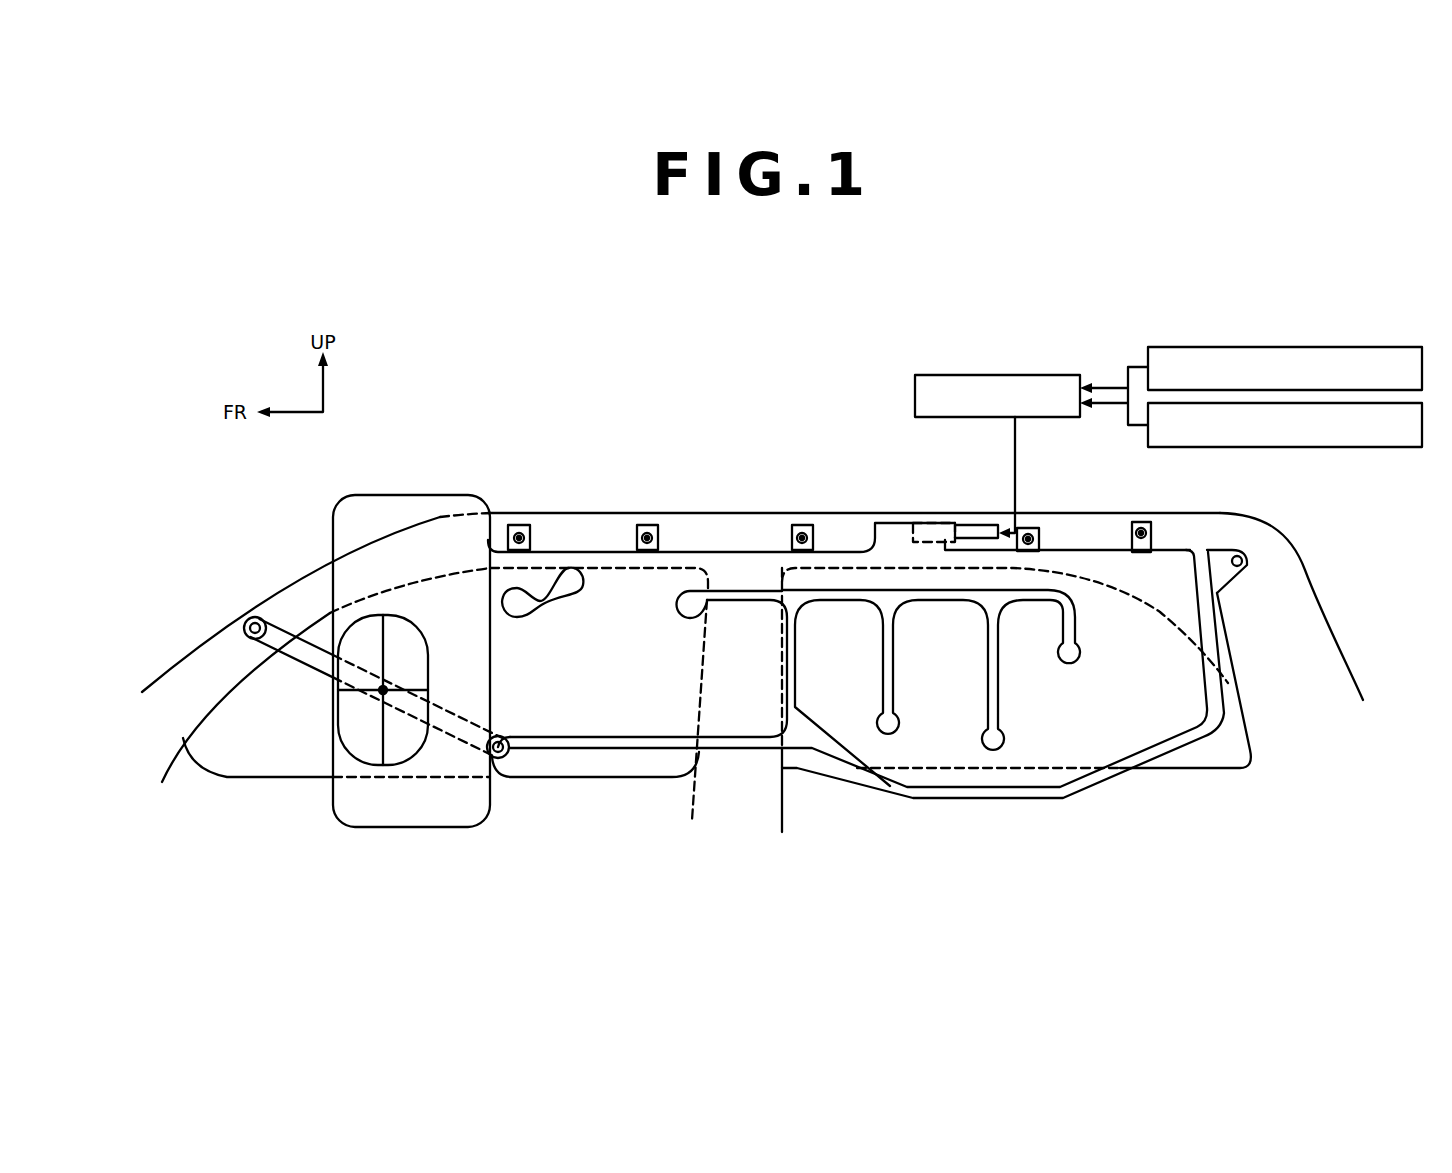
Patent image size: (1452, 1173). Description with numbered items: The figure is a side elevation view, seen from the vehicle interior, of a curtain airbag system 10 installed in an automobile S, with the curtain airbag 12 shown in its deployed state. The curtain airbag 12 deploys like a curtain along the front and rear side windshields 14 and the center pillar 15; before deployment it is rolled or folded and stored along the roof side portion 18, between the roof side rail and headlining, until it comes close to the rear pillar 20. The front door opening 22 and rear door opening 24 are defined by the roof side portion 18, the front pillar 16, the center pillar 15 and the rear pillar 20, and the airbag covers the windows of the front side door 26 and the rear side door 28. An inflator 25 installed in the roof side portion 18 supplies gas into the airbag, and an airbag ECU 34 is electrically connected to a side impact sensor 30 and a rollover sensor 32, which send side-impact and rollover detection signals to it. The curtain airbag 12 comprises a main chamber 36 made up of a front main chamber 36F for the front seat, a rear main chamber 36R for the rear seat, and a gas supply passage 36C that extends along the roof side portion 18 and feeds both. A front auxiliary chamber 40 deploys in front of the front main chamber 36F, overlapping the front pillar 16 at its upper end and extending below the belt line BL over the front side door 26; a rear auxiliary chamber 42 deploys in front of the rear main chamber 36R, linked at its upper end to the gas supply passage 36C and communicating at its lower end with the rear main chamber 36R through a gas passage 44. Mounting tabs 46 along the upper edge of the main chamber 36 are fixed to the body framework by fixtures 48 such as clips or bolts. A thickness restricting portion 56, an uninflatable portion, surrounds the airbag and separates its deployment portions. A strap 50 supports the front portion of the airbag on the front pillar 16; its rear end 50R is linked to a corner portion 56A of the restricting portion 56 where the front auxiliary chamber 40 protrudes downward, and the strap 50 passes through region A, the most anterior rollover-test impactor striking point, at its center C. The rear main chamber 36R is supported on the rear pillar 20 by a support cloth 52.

The curtain airbag system 10 is at (851, 805).
The curtain airbag 12 is at (758, 748).
The side windshield 14 is at (283, 750).
The center pillar 15 is at (697, 792).
The front pillar 16 is at (208, 643).
The roof side portion 18 is at (775, 513).
The rear pillar 20 is at (1297, 597).
The front door opening 22 is at (598, 575).
The rear door opening 24 is at (850, 570).
The inflator 25 is at (983, 520).
The front side door 26 is at (577, 790).
The rear side door 28 is at (1080, 807).
The side impact sensor 30 is at (1228, 347).
The rollover sensor 32 is at (1220, 447).
The airbag ECU 34 is at (962, 375).
The main chamber 36 is at (931, 633).
The gas supply passage 36C is at (718, 568).
The front main chamber 36F is at (617, 720).
The rear main chamber 36R is at (1180, 703).
The front auxiliary chamber 40 is at (397, 805).
The rear auxiliary chamber 42 is at (935, 753).
The gas passage 44 is at (995, 775).
The mounting tab 46 is at (523, 513).
The fixture 48 is at (515, 527).
The strap 50 is at (293, 650).
The rear end of strap 50R is at (498, 737).
The support cloth 52 is at (1225, 573).
The thickness restricting portion 56 is at (895, 787).
The corner portion 56A is at (518, 740).
The region A is at (430, 678).
The center of region A C is at (383, 690).
The automobile S is at (742, 512).
The belt line BL is at (530, 773).